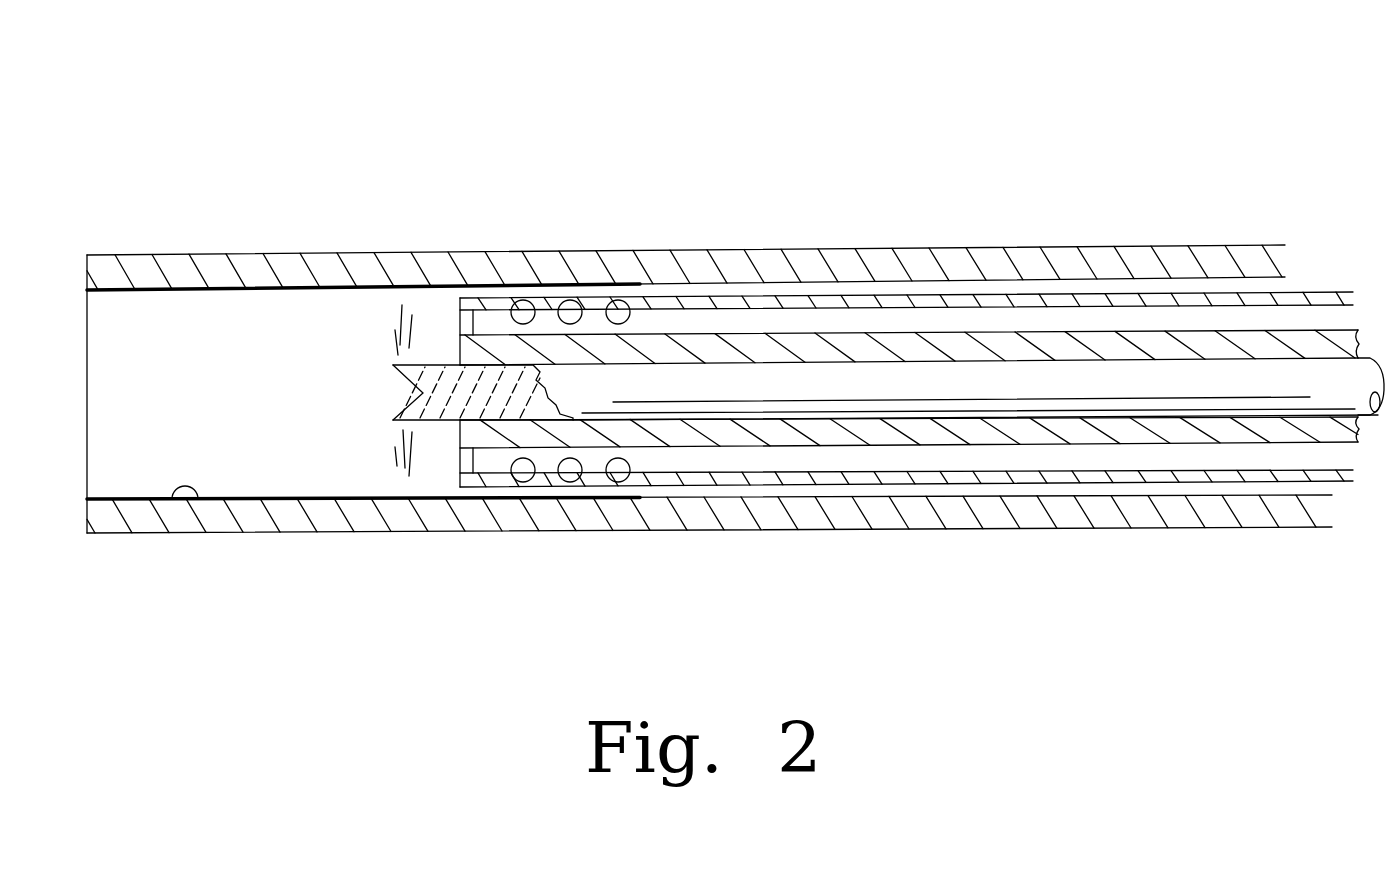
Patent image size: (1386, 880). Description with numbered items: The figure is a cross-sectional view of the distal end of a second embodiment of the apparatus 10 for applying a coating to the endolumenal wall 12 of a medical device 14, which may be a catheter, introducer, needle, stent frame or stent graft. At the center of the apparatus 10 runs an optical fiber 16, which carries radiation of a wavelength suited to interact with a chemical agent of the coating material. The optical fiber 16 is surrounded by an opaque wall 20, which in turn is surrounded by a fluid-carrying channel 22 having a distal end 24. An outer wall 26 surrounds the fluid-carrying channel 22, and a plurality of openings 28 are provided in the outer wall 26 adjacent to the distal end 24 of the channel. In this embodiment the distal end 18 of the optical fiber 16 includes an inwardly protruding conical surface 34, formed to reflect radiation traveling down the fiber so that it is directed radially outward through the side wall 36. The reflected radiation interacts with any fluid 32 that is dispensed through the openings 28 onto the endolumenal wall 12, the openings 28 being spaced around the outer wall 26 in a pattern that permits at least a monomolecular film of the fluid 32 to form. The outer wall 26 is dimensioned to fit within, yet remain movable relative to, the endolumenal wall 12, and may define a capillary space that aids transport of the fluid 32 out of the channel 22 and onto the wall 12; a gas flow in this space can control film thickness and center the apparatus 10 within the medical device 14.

The apparatus 10 is at (276, 134).
The endolumenal wall 12 is at (194, 401).
The medical device 14 is at (522, 258).
The optical fiber 16 is at (820, 398).
The distal end 18 is at (394, 406).
The opaque wall 20 is at (852, 347).
The fluid-carrying channel 22 is at (1060, 458).
The distal end 24 is at (463, 320).
The outer wall 26 is at (990, 477).
The openings 28 is at (623, 304).
The fluid 32 is at (176, 499).
The conical surface 34 is at (395, 366).
The side wall 36 is at (444, 428).